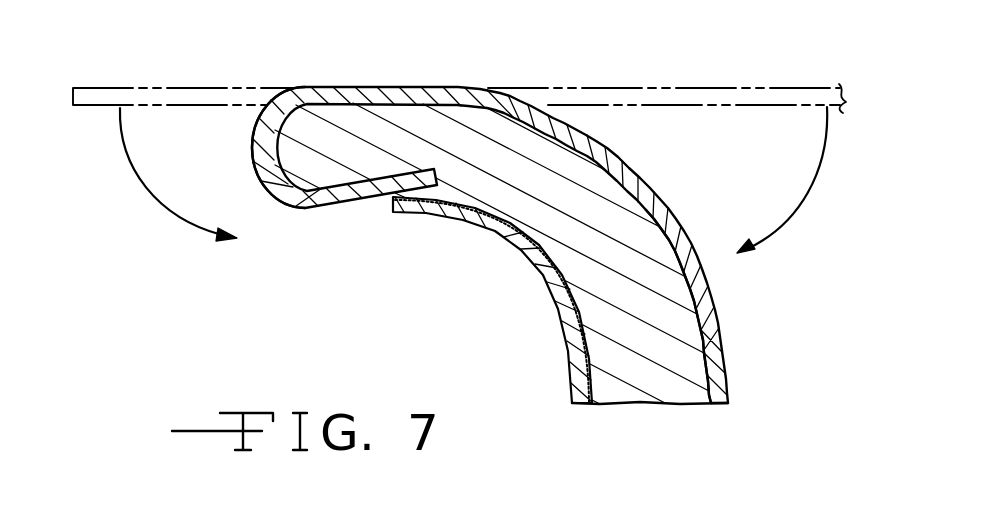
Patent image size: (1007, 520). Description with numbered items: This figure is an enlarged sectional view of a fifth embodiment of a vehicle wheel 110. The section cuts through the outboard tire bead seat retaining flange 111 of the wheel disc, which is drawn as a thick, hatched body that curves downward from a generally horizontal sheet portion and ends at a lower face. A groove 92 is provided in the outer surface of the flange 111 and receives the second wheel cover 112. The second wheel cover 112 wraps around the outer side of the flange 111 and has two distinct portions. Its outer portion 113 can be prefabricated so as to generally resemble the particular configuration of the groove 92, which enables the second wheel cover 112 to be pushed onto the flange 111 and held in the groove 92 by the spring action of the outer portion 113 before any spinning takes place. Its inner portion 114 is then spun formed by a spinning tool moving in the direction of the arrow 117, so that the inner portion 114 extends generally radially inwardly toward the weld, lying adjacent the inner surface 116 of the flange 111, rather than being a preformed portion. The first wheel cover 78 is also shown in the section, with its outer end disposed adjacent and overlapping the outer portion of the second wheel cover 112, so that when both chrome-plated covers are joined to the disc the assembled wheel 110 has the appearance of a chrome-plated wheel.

The first wheel cover 78 is at (555, 377).
The groove 92 is at (421, 190).
The vehicle wheel 110 is at (778, 265).
The outboard tire bead seat retaining flange 111 is at (632, 213).
The second wheel cover 112 is at (289, 213).
The outer portion of the second wheel cover 113 is at (141, 88).
The inner portion of the second wheel cover 114 is at (781, 88).
The inner surface of the outboard tire bead seat retaining flange 116 is at (718, 313).
The arrow 117 is at (656, 408).